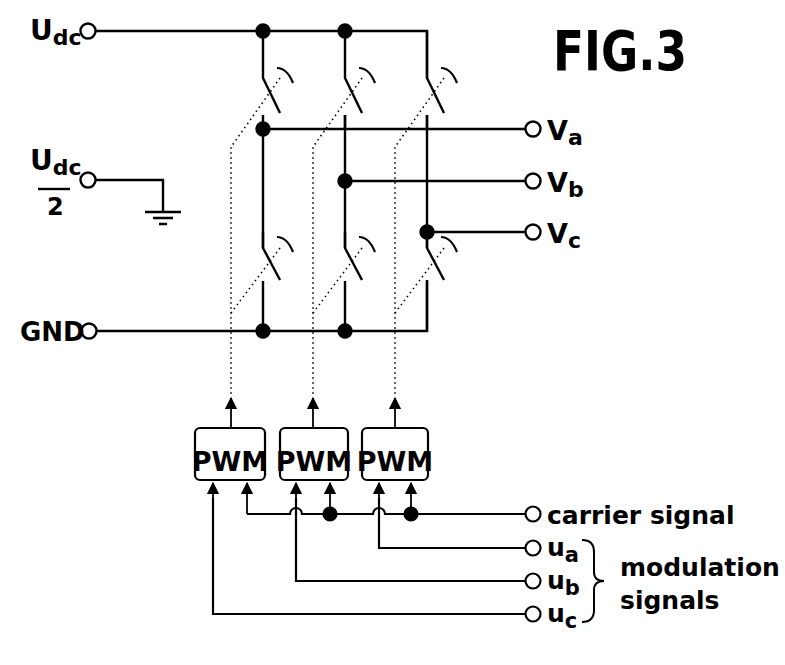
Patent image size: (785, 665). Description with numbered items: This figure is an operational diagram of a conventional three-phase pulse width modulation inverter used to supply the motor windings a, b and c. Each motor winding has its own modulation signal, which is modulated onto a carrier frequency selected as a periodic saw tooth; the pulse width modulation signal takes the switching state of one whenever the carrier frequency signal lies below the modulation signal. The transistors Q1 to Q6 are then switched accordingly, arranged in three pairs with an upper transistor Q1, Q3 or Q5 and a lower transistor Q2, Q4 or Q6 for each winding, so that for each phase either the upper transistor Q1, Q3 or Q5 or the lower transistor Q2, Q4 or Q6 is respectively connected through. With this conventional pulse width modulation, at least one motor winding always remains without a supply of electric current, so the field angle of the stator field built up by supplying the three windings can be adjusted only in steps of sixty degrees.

The upper transistor Q1 is at (261, 229).
The lower transistor Q2 is at (261, 281).
The upper transistor Q3 is at (343, 229).
The lower transistor Q4 is at (343, 281).
The upper transistor Q5 is at (425, 229).
The lower transistor Q6 is at (425, 281).